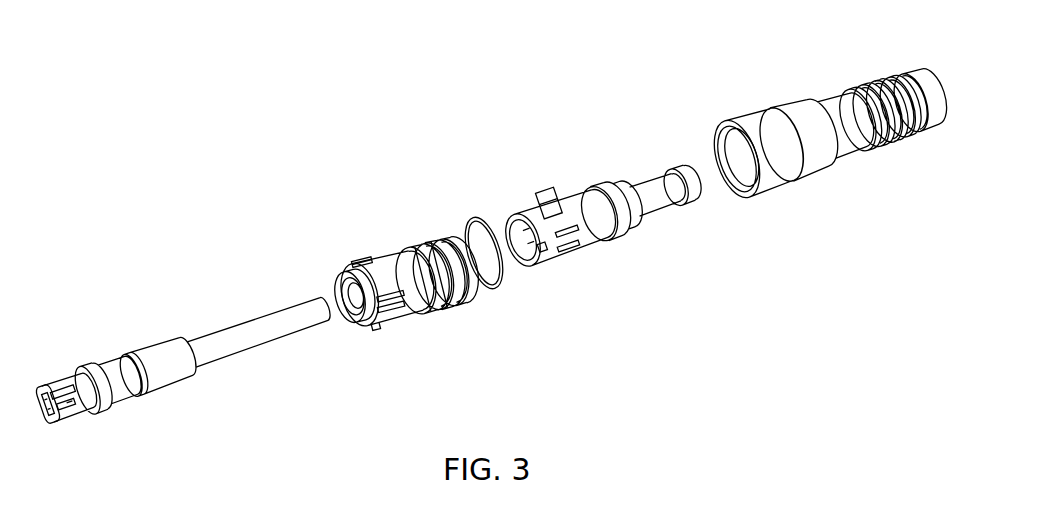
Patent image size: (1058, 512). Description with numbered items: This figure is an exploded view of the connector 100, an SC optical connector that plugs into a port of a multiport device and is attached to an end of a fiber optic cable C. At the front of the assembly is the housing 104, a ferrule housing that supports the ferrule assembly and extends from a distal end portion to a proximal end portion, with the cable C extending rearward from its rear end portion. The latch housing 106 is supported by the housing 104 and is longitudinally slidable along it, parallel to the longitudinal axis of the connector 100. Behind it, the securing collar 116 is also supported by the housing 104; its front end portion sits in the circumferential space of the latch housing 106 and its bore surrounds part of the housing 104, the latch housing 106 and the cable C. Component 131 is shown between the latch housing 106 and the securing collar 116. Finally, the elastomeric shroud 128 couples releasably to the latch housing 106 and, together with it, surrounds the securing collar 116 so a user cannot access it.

The connector 100 is at (365, 117).
The housing 104 is at (103, 357).
The fiber optic cable C is at (240, 333).
The latch housing 106 is at (348, 245).
The O-ring seal 131 is at (470, 215).
The securing collar 116 is at (540, 185).
The shroud 128 is at (760, 102).